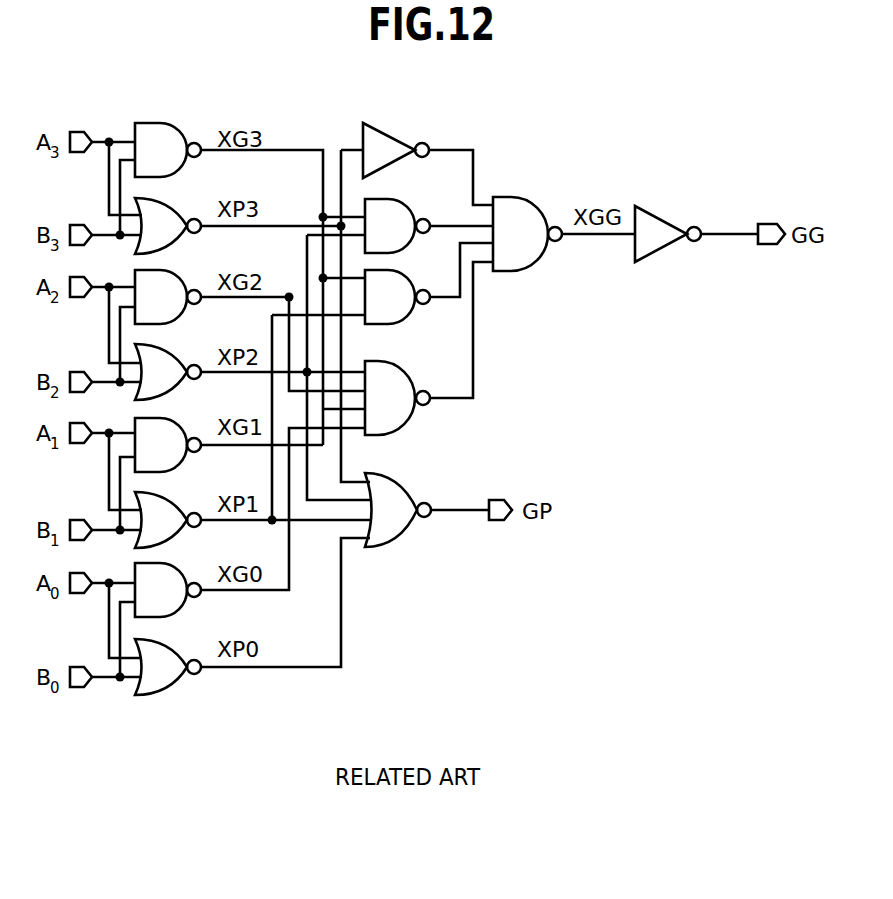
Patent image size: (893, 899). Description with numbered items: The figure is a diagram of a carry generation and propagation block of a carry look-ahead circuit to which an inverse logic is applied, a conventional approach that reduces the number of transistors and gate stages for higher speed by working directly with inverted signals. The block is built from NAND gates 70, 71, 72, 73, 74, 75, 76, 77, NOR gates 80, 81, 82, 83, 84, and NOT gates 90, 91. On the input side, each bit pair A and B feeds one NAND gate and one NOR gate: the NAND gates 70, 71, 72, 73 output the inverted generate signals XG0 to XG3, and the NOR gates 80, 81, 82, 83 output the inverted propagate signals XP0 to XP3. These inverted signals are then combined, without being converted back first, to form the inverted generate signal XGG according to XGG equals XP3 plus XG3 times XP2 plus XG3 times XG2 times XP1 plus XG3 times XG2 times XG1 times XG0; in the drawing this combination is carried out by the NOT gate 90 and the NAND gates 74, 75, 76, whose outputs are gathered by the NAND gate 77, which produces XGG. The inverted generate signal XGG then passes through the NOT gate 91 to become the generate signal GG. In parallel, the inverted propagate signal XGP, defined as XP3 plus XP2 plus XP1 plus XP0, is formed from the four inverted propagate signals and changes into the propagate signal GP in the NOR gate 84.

The NAND gate 70 is at (178, 563).
The NAND gate 71 is at (178, 418).
The NAND gate 72 is at (177, 271).
The NAND gate 73 is at (177, 124).
The NAND gate 74 is at (410, 362).
The NAND gate 75 is at (412, 272).
The NAND gate 76 is at (408, 198).
The NAND gate 77 is at (541, 200).
The NOR gate 80 is at (175, 645).
The NOR gate 81 is at (175, 498).
The NOR gate 82 is at (175, 350).
The NOR gate 83 is at (174, 204).
The NOR gate 84 is at (411, 470).
The NOT gate 90 is at (400, 133).
The NOT gate 91 is at (662, 211).